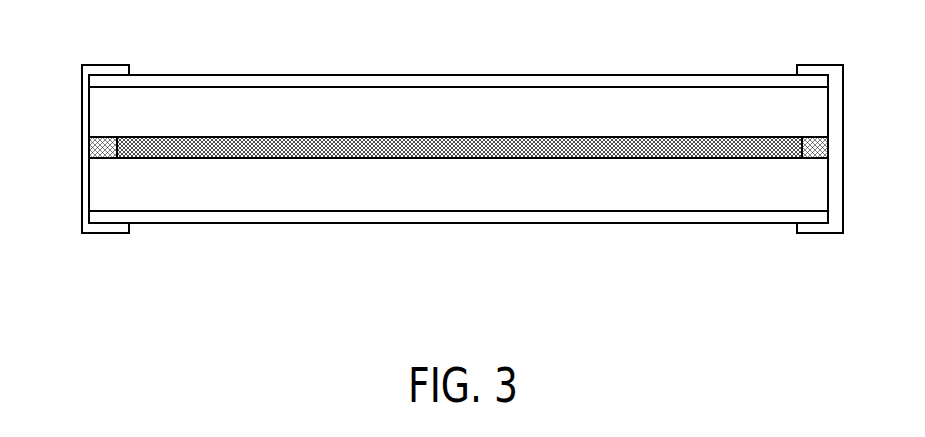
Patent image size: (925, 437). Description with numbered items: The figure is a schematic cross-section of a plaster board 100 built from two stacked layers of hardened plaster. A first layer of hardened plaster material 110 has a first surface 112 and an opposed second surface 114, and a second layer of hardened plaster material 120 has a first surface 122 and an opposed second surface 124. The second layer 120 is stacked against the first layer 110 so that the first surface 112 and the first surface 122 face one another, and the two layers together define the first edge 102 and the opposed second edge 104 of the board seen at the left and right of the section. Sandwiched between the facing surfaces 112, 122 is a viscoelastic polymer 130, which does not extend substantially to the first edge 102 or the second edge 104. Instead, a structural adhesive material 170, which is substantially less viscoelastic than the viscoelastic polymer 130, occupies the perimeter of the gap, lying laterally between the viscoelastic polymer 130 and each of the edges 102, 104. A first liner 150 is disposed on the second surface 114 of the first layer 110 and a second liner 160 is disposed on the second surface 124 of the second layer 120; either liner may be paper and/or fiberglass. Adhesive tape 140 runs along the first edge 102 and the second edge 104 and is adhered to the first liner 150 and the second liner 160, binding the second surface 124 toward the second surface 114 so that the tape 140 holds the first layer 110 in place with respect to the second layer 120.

The plaster board 100 is at (482, 270).
The first edge 102 is at (830, 172).
The second edge 104 is at (89, 90).
The first layer of hardened plaster material 110 is at (723, 193).
The first surface of the first layer 112 is at (300, 160).
The second surface of the first layer 114 is at (400, 212).
The second layer of hardened plaster material 120 is at (717, 98).
The first surface of the second layer 122 is at (247, 137).
The second surface of the second layer 124 is at (375, 87).
The viscoelastic polymer 130 is at (215, 145).
The adhesive tape 140 is at (110, 70).
The first liner 150 is at (627, 220).
The second liner 160 is at (555, 78).
The structural adhesive material 170 is at (98, 150).